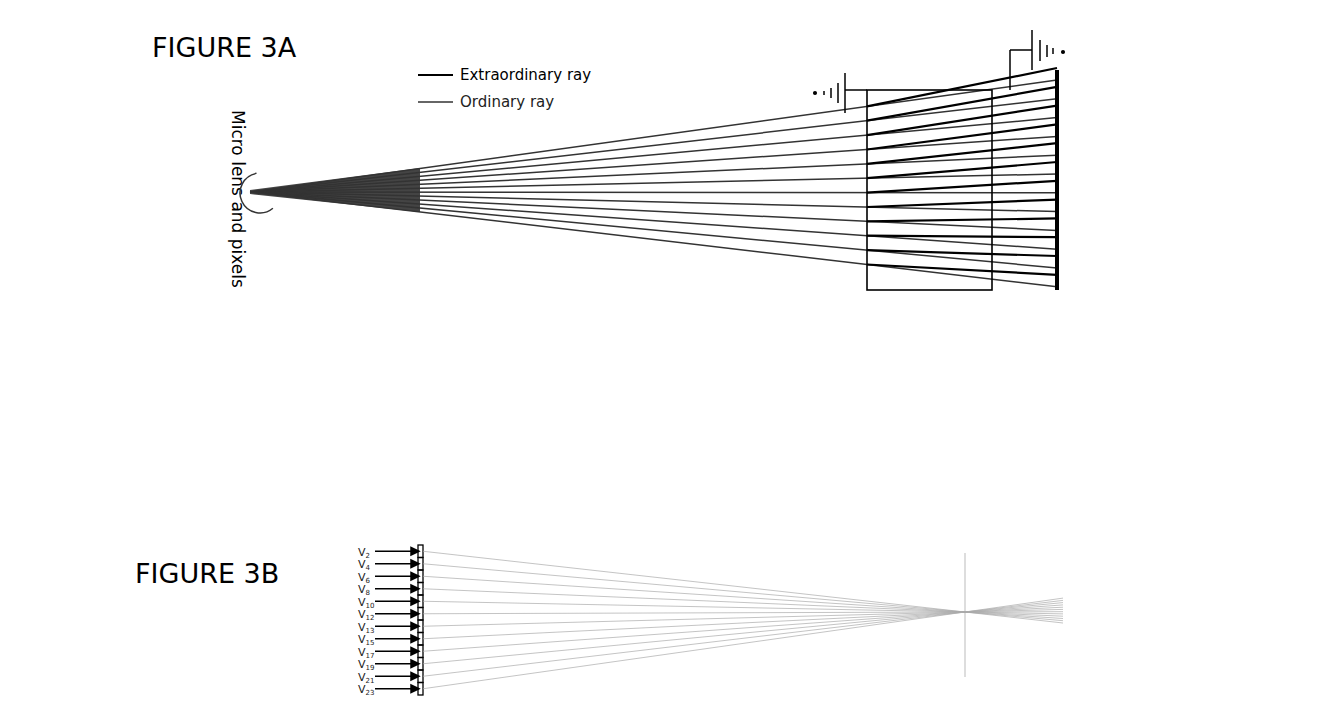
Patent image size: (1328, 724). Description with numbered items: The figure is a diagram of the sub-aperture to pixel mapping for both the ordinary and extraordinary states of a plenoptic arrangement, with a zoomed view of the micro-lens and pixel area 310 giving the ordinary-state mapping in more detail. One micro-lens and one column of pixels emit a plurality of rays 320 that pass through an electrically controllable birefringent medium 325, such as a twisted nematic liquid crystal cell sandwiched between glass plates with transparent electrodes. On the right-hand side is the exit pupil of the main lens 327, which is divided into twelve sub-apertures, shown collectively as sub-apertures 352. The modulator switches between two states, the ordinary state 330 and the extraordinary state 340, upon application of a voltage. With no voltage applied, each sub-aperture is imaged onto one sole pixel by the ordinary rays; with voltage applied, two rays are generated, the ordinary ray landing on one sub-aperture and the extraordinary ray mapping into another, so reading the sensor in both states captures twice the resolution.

The area of the micro-lens and pixels 310 is at (270, 220).
The plurality of rays 320 is at (475, 277).
The birefringent medium (electro optical modulator) 325 is at (880, 280).
The exit pupil of the main lens 327 is at (1037, 298).
The ordinary state of the medium 330 is at (983, 265).
The extraordinary state of the medium 340 is at (972, 210).
The sub-apertures V1 to V12 (array of lenses) 352 is at (1227, 172).